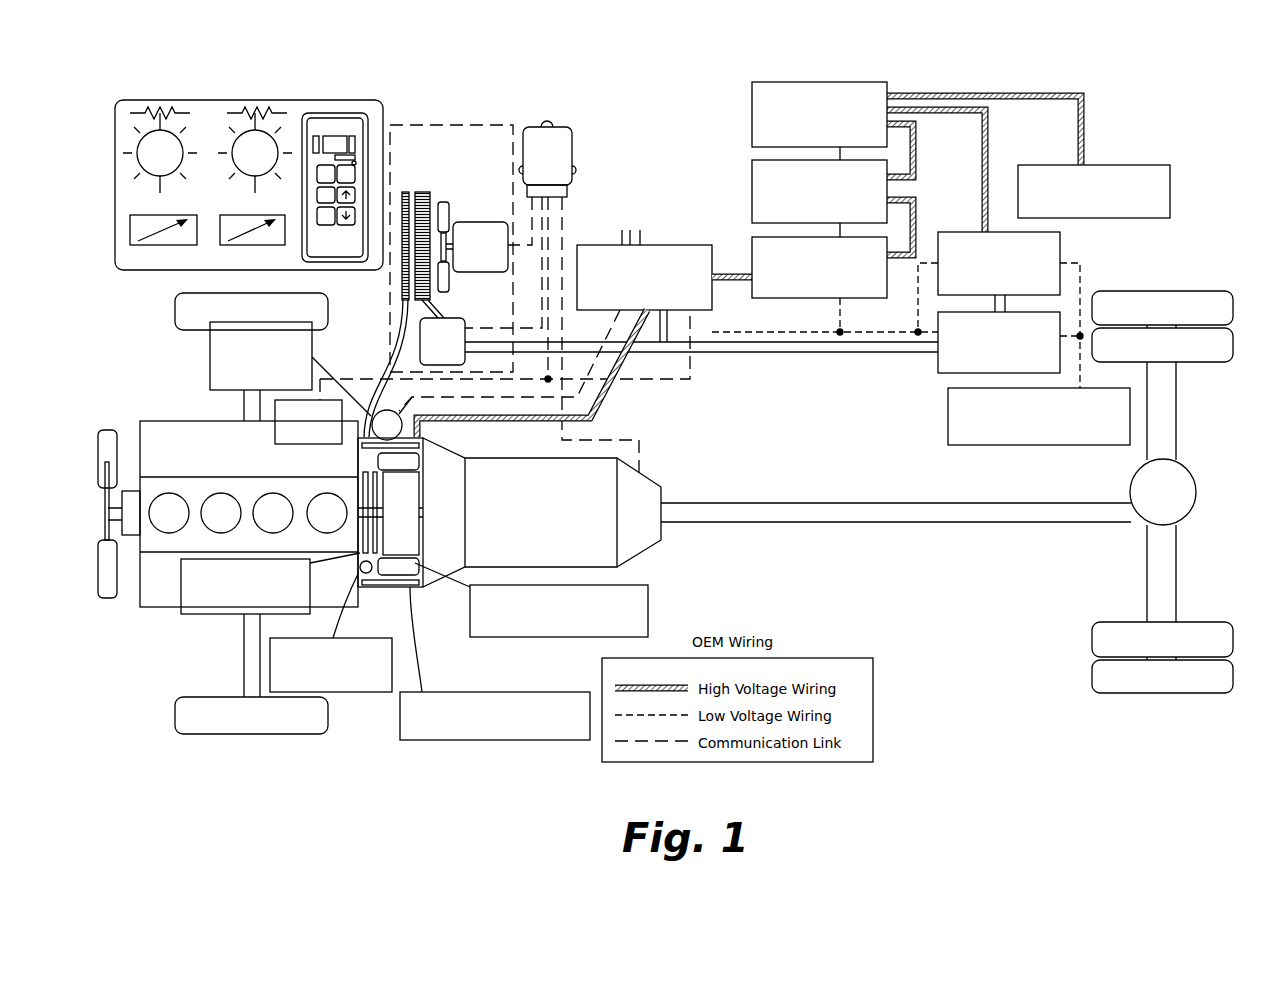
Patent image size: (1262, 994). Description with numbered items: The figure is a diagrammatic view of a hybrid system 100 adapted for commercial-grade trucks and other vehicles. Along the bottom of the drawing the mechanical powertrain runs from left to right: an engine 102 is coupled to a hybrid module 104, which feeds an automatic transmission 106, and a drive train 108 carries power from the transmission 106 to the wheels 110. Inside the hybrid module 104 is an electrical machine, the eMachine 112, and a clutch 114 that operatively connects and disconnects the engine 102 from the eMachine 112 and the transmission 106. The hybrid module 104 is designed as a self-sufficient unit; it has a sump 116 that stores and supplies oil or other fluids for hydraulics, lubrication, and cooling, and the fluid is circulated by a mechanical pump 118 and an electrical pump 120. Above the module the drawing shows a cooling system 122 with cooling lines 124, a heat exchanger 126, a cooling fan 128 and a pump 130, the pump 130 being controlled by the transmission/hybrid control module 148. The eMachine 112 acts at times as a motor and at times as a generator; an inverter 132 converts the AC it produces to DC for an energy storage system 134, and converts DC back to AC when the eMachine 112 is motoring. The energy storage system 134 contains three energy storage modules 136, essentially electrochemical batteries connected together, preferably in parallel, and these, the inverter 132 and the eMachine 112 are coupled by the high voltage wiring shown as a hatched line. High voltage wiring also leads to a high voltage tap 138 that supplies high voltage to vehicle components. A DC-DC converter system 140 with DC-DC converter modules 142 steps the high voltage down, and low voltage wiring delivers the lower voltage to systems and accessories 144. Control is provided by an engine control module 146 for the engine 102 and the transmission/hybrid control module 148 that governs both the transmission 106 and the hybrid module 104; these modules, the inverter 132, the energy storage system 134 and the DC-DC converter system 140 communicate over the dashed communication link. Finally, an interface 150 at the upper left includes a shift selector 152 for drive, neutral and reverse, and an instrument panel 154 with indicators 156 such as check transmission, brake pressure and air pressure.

The hybrid system 100 is at (674, 387).
The engine 102 is at (140, 421).
The hybrid module 104 is at (356, 540).
The automatic transmission 106 is at (656, 483).
The drive train 108 is at (918, 523).
The wheels 110 is at (1218, 291).
The eMachine 112 is at (420, 565).
The clutch 114 is at (363, 497).
The sump 116 is at (398, 587).
The mechanical pump 118 is at (360, 573).
The electrical pump 120 is at (385, 410).
The OEM series cooling system 122 is at (432, 250).
The cooling lines 124 is at (397, 272).
The heat exchanger / radiator 126 is at (424, 197).
The cooling fan 128 is at (492, 222).
The pump 130 is at (450, 318).
The inverter 132 is at (665, 245).
The energy storage system 134 is at (824, 179).
The energy storage modules 136 is at (860, 82).
The high voltage tap 138 is at (1170, 182).
The DC-DC converter system 140 is at (1017, 283).
The DC-DC converter modules 142 is at (968, 232).
The systems and accessories 144 is at (1060, 445).
The engine control module 146 is at (275, 418).
The transmission/hybrid control module 148 is at (539, 126).
The interface 150 is at (230, 149).
The shift selector 152 is at (330, 112).
The instrument panel 154 is at (185, 144).
The indicators 156 is at (162, 177).